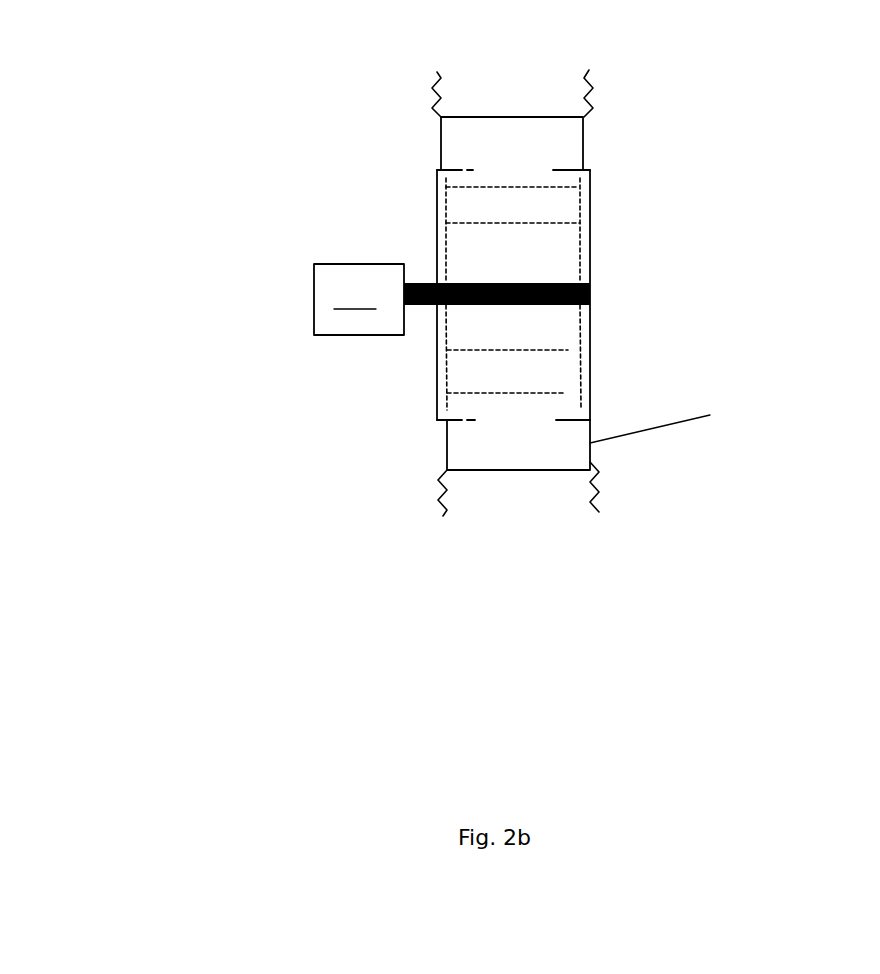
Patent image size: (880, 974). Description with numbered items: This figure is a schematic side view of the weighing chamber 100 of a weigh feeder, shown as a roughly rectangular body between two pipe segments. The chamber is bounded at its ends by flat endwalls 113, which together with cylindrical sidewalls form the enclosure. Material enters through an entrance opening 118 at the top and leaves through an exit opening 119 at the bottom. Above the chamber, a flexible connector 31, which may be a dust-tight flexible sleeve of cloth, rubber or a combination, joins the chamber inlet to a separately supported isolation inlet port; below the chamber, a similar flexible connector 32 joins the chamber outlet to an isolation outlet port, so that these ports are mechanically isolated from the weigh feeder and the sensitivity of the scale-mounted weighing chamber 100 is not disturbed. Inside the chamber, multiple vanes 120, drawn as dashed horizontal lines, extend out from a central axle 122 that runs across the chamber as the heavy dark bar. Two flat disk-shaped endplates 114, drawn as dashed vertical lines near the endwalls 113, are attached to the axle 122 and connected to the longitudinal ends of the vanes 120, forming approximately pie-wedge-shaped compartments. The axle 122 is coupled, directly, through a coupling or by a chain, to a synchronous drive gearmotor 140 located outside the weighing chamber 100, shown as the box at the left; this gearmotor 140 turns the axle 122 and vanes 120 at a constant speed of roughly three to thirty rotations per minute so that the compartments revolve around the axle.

The weighing chamber 100 is at (182, 159).
The flexible connector 31 is at (592, 96).
The flexible connector 32 is at (600, 487).
The flat endwalls 113 is at (437, 208).
The endplates 114 is at (580, 248).
The entrance opening 118 is at (508, 168).
The exit opening 119 is at (520, 418).
The vanes 120 is at (565, 392).
The central axle 122 is at (490, 305).
The synchronous drive gearmotor 140 is at (359, 299).